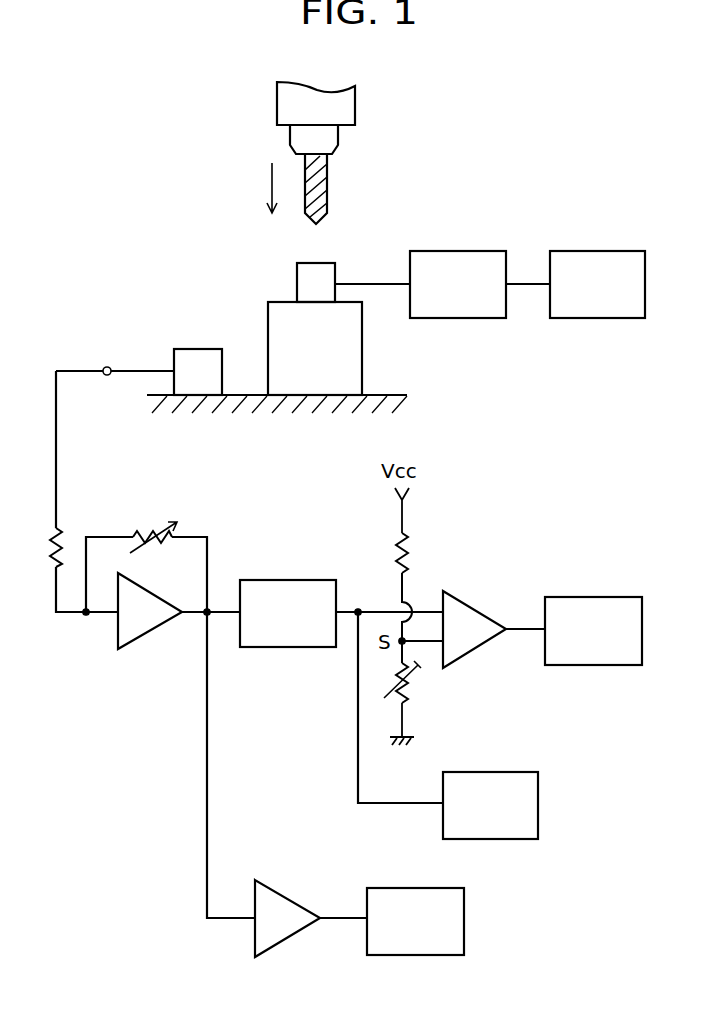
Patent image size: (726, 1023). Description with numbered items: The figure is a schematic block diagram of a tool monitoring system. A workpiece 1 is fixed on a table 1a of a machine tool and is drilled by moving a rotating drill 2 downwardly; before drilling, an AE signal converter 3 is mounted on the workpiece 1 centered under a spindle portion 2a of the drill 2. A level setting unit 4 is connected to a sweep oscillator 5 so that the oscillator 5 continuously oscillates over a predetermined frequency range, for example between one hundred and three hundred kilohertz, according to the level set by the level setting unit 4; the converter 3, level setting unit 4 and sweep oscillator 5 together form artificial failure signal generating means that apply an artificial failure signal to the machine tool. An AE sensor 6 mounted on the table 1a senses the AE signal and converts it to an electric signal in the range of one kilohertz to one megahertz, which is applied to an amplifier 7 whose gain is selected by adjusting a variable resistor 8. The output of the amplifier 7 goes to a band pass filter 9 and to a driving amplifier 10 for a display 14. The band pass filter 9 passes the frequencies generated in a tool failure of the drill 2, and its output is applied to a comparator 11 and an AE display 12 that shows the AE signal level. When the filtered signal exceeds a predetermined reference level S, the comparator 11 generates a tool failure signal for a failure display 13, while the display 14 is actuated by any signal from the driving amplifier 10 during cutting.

The workpiece 1 is at (362, 360).
The table 1a is at (382, 395).
The drill 2 is at (327, 175).
The spindle portion 2a is at (337, 112).
The AE signal converter 3 is at (297, 278).
The level setting unit 4 is at (610, 250).
The sweep oscillator 5 is at (477, 247).
The AE sensor 6 is at (192, 349).
The amplifier 7 is at (155, 630).
The variable resistor 8 is at (152, 520).
The band pass filter 9 is at (305, 578).
The driving amplifier 10 is at (297, 900).
The comparator 11 is at (473, 607).
The AE display 12 is at (538, 783).
The failure display 13 is at (593, 597).
The display 14 is at (464, 898).